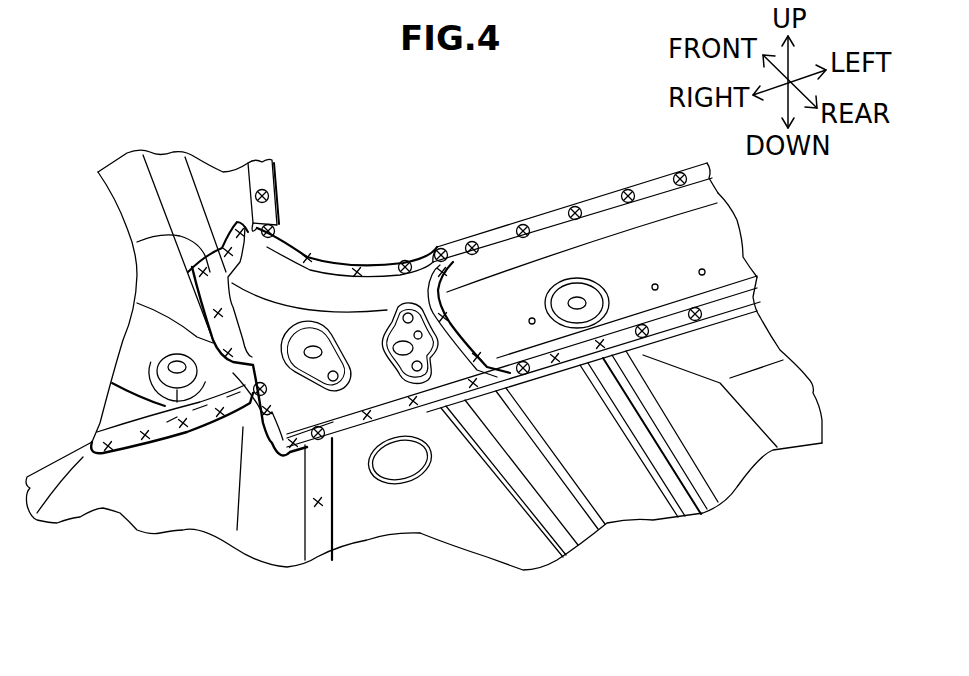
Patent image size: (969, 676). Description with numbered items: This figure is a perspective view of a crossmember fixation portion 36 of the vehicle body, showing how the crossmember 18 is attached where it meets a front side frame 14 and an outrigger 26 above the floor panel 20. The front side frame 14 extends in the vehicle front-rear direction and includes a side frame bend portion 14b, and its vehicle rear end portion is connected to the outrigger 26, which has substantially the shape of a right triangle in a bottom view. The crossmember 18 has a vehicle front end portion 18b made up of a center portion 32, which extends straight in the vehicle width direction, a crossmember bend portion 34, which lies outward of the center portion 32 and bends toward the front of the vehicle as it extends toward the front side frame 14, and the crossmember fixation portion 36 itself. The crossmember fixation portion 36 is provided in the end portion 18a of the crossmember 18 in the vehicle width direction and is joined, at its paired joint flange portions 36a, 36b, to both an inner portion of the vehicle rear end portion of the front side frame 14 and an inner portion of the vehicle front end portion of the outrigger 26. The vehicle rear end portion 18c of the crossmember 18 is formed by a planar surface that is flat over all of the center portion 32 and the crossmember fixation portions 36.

The front side frame 14 is at (180, 143).
The side frame bend portion 14b is at (278, 183).
The crossmember 18 is at (747, 226).
The end portion of the crossmember 18a is at (137, 303).
The vehicle front end portion of the crossmember 18b is at (557, 202).
The vehicle rear end portion of the crossmember 18c is at (513, 393).
The floor panel 20 is at (783, 390).
The outrigger 26 is at (197, 497).
The center portion 32 is at (720, 253).
The crossmember bend portion 34 is at (297, 240).
The crossmember fixation portion 36 is at (117, 382).
The joint flange portion 36a is at (137, 242).
The joint flange portion 36b is at (345, 445).